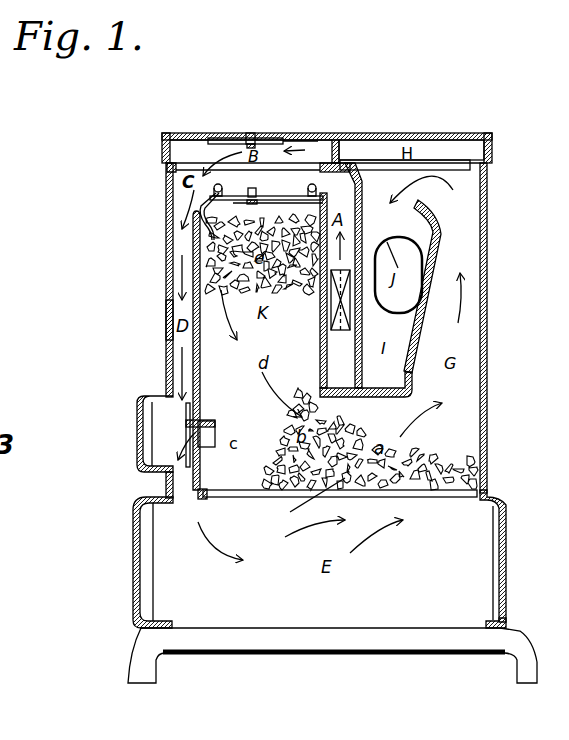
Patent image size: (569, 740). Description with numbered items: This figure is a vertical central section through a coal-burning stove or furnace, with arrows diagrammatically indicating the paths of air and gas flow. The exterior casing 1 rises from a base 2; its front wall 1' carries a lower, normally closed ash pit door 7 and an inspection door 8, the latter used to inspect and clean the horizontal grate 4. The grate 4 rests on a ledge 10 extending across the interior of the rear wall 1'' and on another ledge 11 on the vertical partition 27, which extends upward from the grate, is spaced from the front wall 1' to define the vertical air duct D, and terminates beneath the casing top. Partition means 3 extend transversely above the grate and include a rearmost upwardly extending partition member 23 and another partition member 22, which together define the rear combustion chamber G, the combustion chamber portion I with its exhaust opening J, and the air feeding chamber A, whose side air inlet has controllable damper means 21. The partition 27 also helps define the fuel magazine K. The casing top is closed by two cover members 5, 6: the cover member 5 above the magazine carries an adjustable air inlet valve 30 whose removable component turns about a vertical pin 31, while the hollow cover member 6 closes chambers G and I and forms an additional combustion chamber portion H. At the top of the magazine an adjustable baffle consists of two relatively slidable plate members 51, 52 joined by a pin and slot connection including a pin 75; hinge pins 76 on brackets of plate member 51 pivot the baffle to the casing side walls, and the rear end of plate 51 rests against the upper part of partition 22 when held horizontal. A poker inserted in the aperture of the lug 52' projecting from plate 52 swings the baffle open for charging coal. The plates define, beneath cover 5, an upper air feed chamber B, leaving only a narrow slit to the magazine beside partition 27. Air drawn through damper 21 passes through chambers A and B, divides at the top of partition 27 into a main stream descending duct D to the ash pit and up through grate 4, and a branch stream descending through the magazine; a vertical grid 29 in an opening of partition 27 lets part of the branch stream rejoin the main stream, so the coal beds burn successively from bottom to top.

The exterior casing 1 is at (151, 280).
The front wall 1' is at (147, 320).
The rear wall 1'' is at (502, 328).
The base 2 is at (331, 645).
The partition means 3 is at (360, 177).
The horizontal grate 4 is at (263, 497).
The cover member 5 is at (173, 133).
The cover member 6 is at (476, 134).
The ash pit door 7 is at (133, 518).
The inspection door 8 is at (138, 398).
The ledge 10 is at (476, 497).
The ledge 11 is at (204, 499).
The controllable damper means 21 is at (341, 317).
The partition member 22 is at (366, 295).
The partition member 23 is at (438, 235).
The vertical partition 27 is at (192, 236).
The vertical grid 29 is at (186, 430).
The adjustable air inlet valve 30 is at (236, 135).
The vertical pin 31 is at (249, 133).
The plate member 51 is at (300, 200).
The plate member 52 is at (266, 155).
The lug 52' is at (220, 216).
The pin 75 is at (253, 188).
The hinge pins 76 is at (330, 166).